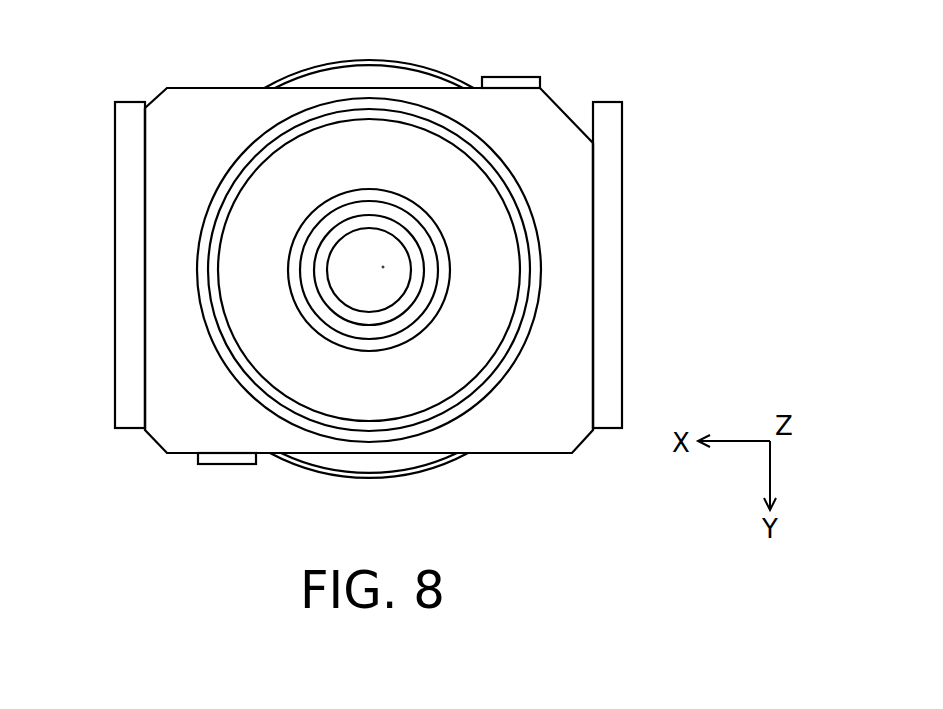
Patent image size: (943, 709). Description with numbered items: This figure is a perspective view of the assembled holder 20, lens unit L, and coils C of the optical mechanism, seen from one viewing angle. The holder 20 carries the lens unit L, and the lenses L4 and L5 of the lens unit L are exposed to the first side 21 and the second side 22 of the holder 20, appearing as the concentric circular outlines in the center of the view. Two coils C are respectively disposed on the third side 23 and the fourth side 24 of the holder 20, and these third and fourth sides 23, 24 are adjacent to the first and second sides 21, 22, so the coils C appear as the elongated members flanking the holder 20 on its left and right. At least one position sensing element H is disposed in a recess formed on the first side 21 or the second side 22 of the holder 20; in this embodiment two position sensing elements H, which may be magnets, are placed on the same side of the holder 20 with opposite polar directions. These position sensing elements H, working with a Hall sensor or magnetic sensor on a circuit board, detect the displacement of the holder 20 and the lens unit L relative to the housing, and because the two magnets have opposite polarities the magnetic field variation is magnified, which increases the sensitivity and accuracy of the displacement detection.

The holder 20 is at (170, 373).
The first side 21 is at (213, 87).
The second side 22 is at (513, 455).
The third side 23 is at (145, 264).
The fourth side 24 is at (595, 232).
The coil C is at (125, 212).
The position sensing element H is at (513, 82).
The lens L4 is at (333, 80).
The lens L5 is at (402, 63).
The lens unit L is at (390, 266).